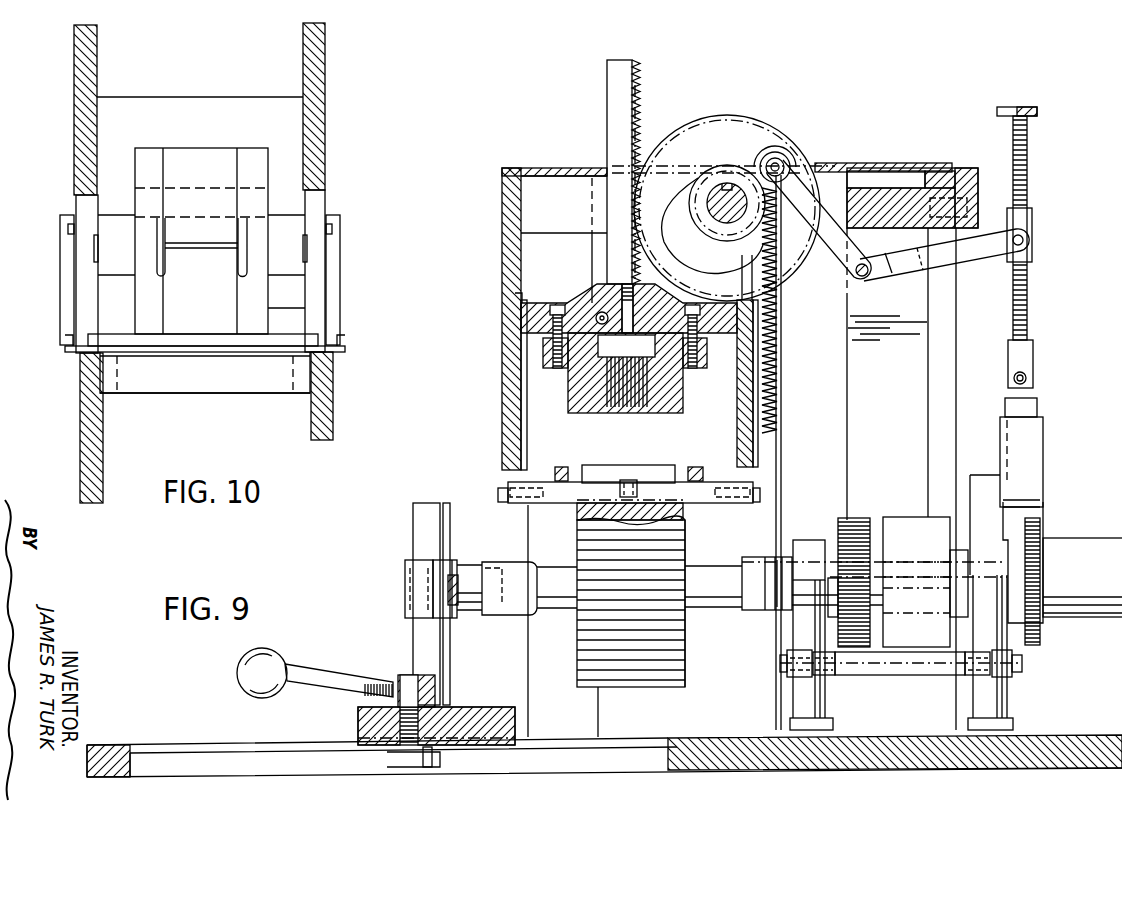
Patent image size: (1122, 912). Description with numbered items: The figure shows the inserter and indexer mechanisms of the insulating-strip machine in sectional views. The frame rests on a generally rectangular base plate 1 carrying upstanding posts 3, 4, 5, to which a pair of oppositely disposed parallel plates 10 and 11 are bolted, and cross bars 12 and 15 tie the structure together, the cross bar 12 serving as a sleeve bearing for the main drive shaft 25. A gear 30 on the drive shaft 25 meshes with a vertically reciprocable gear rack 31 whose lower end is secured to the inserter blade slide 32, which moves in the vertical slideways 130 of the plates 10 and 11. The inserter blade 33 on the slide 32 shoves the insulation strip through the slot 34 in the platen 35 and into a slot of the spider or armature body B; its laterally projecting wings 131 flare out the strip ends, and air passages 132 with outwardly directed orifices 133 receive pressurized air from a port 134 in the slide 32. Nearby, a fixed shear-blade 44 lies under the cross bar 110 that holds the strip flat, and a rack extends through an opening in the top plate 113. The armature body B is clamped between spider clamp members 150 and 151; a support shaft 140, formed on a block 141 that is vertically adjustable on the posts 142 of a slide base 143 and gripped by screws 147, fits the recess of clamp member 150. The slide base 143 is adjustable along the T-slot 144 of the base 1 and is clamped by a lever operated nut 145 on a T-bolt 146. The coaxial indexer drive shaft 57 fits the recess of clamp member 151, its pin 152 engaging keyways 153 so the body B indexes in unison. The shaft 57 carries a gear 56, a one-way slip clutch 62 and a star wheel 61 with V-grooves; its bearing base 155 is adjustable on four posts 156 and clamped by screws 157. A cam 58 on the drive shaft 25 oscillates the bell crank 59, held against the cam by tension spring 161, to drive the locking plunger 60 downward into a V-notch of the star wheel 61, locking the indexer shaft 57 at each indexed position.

In FIG. 9, the base plate 1 is at (97, 747).
In FIG. 9, the upstanding post 3 is at (533, 436).
In FIG. 9, the upstanding post 4 is at (777, 710).
In FIG. 9, the upstanding post 5 is at (848, 386).
In FIG. 10, the parallel plate 10 is at (312, 428).
In FIG. 9, the parallel plate 10 is at (758, 452).
In FIG. 10, the parallel plate 11 is at (100, 442).
In FIG. 9, the parallel plate 11 is at (505, 455).
In FIG. 9, the cross bar 12 is at (533, 210).
In FIG. 9, the cross bar 15 is at (975, 178).
In FIG. 9, the drive shaft 25 is at (720, 196).
In FIG. 9, the gear 30 is at (718, 114).
In FIG. 9, the gear rack 31 is at (607, 94).
In FIG. 9, the inserter blade slide 32 is at (603, 296).
In FIG. 9, the inserter blade 33 is at (684, 379).
In FIG. 10, the slot 34 is at (240, 246).
In FIG. 9, the slot 34 is at (676, 467).
In FIG. 10, the platen 35 is at (270, 309).
In FIG. 9, the platen 35 is at (701, 478).
In FIG. 10, the fixed shear-blade 44 is at (207, 395).
In FIG. 9, the gear 56 is at (857, 518).
In FIG. 9, the indexer shaft 57 is at (826, 540).
In FIG. 9, the cam 58 is at (754, 259).
In FIG. 9, the bell crank 59 is at (818, 241).
In FIG. 9, the locking plunger 60 is at (1045, 508).
In FIG. 9, the star wheel 61 is at (1038, 645).
In FIG. 9, the one-way slip clutch 62 is at (892, 517).
In FIG. 10, the cross bar 110 is at (262, 378).
In FIG. 9, the top plate 113 is at (850, 163).
In FIG. 10, the vertical slideways 130 is at (96, 248).
In FIG. 9, the vertical slideways 130 is at (524, 404).
In FIG. 9, the laterally projecting wings 131 is at (568, 402).
In FIG. 9, the air passages 132 is at (640, 410).
In FIG. 9, the orifices 133 is at (612, 410).
In FIG. 9, the port 134 is at (598, 314).
In FIG. 9, the support shaft 140 is at (488, 540).
In FIG. 9, the block 141 is at (405, 595).
In FIG. 9, the posts 142 is at (414, 542).
In FIG. 9, the slide base 143 is at (473, 707).
In FIG. 9, the T-slot 144 is at (192, 752).
In FIG. 9, the lever operated nut 145 is at (385, 678).
In FIG. 9, the T-bolt 146 is at (432, 762).
In FIG. 9, the screws 147 is at (458, 612).
In FIG. 9, the spider clamp member 150 is at (570, 614).
In FIG. 9, the spider clamp member 151 is at (722, 612).
In FIG. 9, the pin 152 is at (762, 575).
In FIG. 9, the keyways 153 is at (777, 568).
In FIG. 9, the base 155 is at (865, 676).
In FIG. 9, the posts 156 is at (826, 700).
In FIG. 9, the screws 157 is at (786, 665).
In FIG. 9, the tension spring 161 is at (777, 330).
In FIG. 9, the armature body B is at (688, 648).